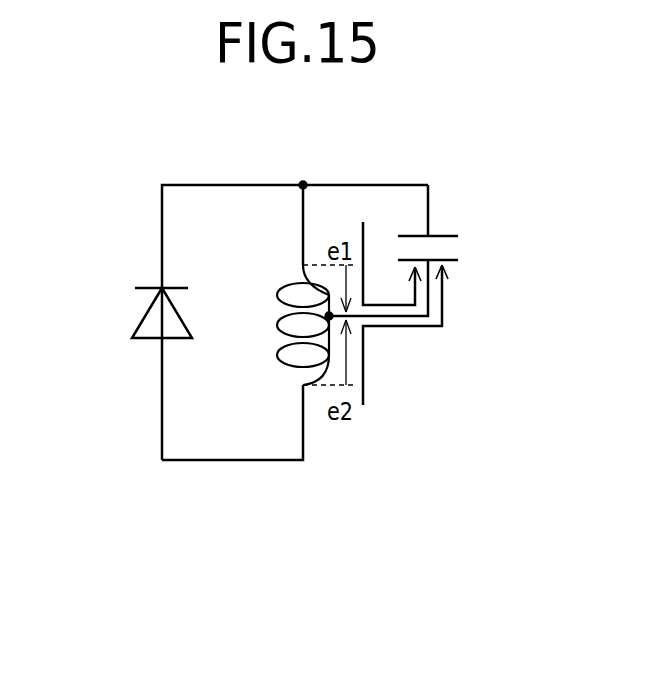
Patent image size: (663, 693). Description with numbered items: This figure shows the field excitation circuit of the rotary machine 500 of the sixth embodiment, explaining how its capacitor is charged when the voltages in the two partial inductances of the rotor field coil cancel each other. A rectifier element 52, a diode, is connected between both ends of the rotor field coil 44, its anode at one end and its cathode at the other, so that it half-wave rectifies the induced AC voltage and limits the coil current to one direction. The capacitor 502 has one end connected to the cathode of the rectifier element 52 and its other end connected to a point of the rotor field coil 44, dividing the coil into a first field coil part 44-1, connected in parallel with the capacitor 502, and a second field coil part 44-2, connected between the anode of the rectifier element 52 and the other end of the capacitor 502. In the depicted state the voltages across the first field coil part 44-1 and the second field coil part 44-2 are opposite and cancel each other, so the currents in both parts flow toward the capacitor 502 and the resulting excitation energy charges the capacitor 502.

The rotary machine 500 is at (118, 218).
The rotor field coil 44 is at (481, 113).
The first field coil part 44-1 is at (290, 283).
The second field coil part 44-2 is at (278, 357).
The rectifier element 52 is at (137, 341).
The capacitor 502 is at (452, 265).